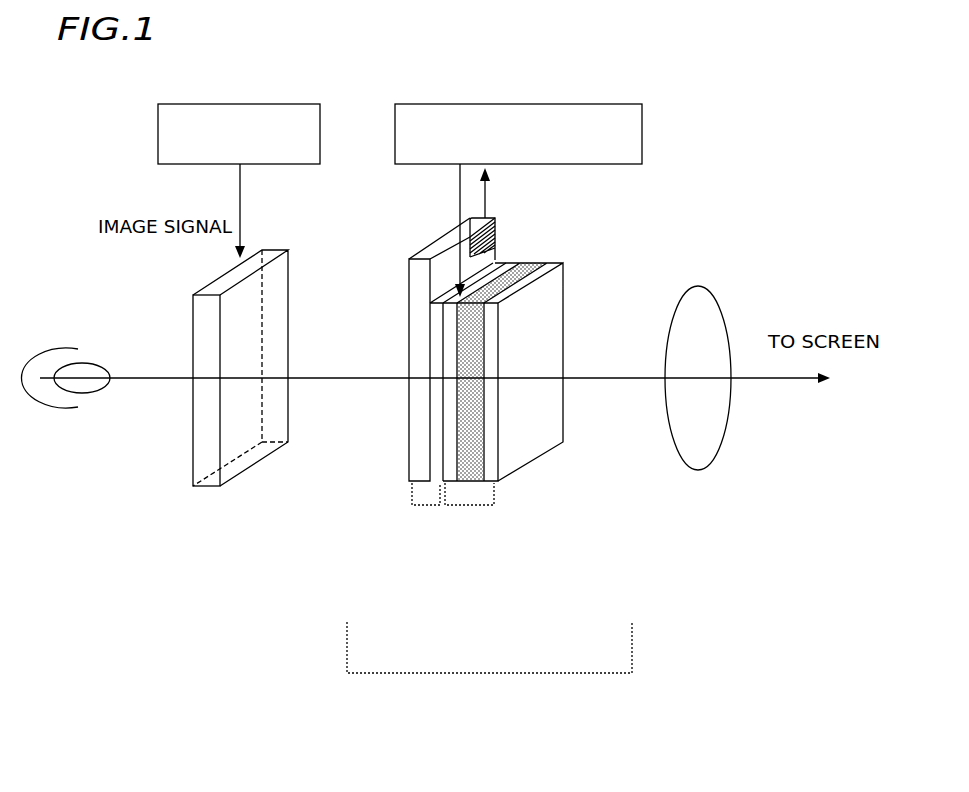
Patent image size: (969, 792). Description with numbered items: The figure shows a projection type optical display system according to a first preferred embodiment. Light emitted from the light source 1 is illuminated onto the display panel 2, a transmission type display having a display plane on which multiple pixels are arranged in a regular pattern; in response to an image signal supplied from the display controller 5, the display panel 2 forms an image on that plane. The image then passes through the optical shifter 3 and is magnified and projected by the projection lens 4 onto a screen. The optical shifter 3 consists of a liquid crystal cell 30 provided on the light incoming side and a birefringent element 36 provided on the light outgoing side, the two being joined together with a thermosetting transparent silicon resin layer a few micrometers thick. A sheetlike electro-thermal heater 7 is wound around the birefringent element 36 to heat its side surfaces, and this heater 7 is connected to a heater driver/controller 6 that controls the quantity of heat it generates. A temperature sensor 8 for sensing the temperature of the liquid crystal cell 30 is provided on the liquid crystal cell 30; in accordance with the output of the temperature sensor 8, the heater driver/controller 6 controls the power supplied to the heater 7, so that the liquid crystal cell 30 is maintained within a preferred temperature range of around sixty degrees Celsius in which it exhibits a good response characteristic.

The light source 1 is at (53, 357).
The display panel 2 is at (200, 487).
The optical shifter 3 is at (480, 673).
The projection lens 4 is at (697, 470).
The display controller 5 is at (258, 104).
The heater driver/controller 6 is at (529, 104).
The heater 7 is at (467, 440).
The temperature sensor 8 is at (492, 233).
The liquid crystal cell 30 is at (428, 527).
The birefringent element 36 is at (482, 525).